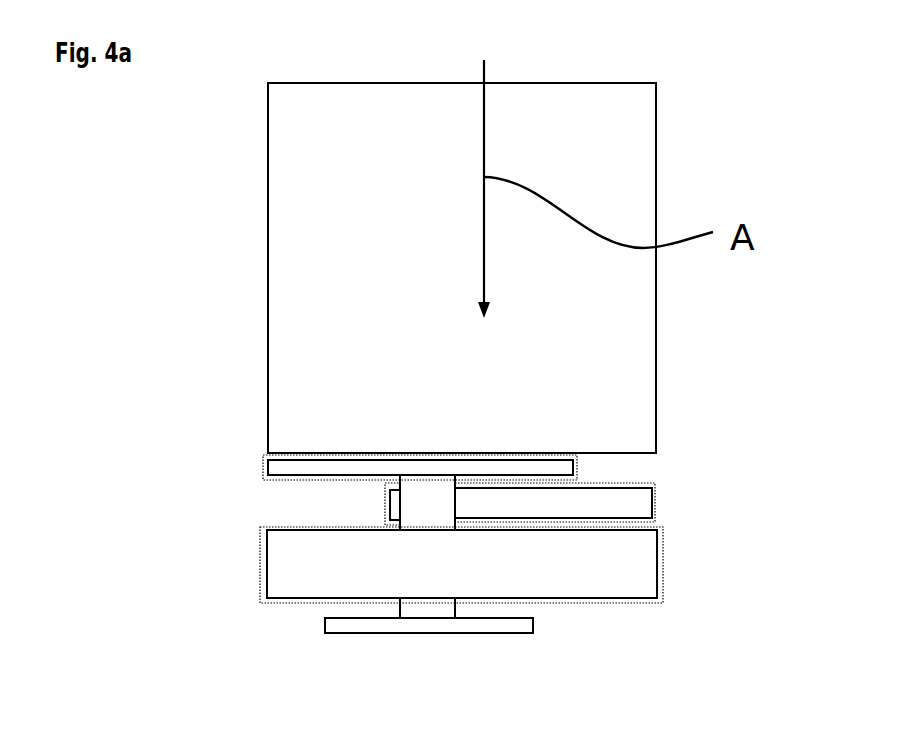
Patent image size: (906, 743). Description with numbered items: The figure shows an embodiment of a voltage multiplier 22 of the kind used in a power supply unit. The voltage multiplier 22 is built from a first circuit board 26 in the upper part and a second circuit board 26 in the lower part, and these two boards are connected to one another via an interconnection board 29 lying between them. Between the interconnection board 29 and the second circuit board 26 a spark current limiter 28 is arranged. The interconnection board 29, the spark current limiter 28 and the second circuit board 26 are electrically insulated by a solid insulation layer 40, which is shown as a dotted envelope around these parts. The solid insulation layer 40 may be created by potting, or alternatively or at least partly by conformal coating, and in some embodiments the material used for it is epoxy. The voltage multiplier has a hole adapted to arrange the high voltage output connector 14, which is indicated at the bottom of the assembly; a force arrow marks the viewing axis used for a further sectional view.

The high voltage output connector 14 is at (388, 649).
The voltage multiplier 22 is at (300, 308).
The voltage multiplier circuit board 26 is at (277, 562).
The spark current limiter 28 is at (612, 508).
The interconnection board 29 is at (277, 468).
The solid insulation layer 40 is at (577, 470).